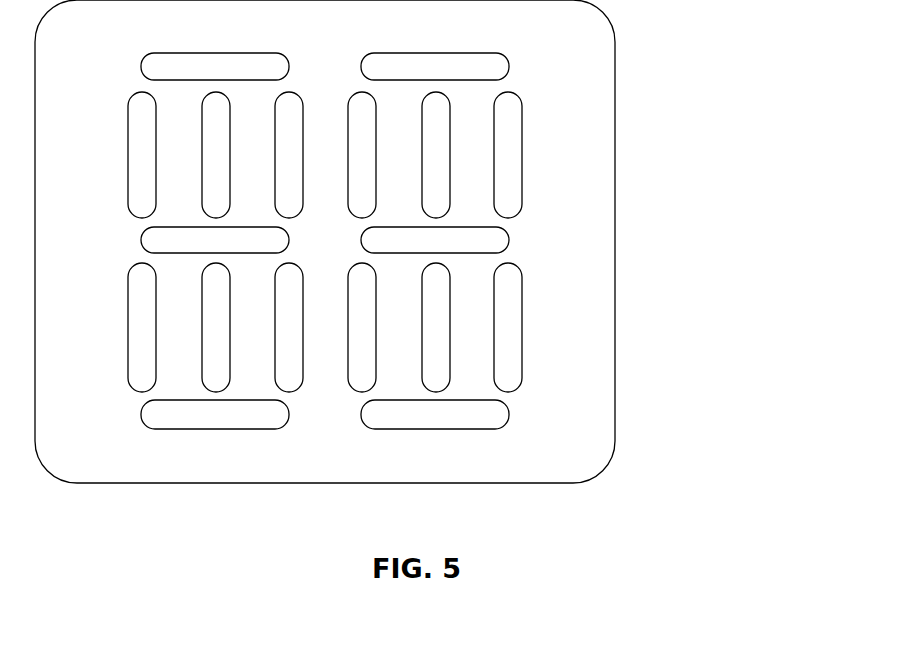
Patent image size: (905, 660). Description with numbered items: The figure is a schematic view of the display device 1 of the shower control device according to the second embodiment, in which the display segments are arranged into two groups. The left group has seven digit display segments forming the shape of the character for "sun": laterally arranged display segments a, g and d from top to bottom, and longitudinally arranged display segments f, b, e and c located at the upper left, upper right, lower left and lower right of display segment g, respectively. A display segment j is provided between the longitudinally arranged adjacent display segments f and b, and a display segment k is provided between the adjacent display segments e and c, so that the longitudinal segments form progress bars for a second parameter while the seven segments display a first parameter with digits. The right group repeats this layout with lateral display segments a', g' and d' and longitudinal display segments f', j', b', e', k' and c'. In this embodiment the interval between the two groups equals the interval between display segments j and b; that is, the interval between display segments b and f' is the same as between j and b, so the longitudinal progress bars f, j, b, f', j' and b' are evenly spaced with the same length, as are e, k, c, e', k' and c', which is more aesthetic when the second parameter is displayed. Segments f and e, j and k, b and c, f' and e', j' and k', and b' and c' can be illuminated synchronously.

The display housing 1 is at (662, 43).
The display segment a is at (215, 51).
The display segment b is at (302, 155).
The display segment c is at (302, 327).
The display segment d is at (215, 434).
The display segment e is at (122, 327).
The display segment f is at (123, 155).
The display segment g is at (215, 222).
The display segment j is at (202, 155).
The display segment k is at (202, 327).
The display segment a' is at (435, 45).
The display segment b' is at (537, 155).
The display segment c' is at (535, 327).
The display segment d' is at (435, 437).
The display segment e' is at (385, 327).
The display segment f' is at (386, 153).
The display segment g' is at (460, 231).
The display segment j' is at (457, 151).
The display segment k' is at (459, 325).